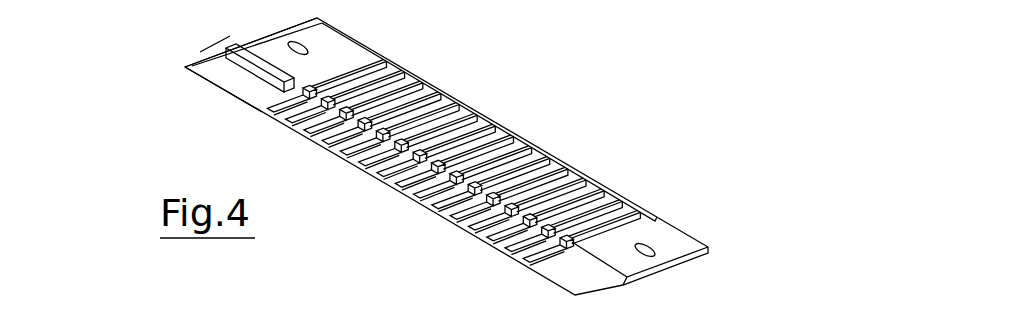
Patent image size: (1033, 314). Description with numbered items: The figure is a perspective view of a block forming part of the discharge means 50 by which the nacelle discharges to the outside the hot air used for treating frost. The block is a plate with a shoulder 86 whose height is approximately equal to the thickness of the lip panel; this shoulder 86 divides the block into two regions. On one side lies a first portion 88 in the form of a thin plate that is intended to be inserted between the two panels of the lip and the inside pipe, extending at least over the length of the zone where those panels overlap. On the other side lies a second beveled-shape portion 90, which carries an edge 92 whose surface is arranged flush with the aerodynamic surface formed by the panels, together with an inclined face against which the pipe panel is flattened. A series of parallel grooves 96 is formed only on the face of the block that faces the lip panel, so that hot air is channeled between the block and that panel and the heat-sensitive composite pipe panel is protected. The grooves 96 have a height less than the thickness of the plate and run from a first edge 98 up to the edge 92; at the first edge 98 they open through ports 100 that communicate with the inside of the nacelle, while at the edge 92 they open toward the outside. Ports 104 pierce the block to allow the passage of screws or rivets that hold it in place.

The discharge means 50 is at (204, 51).
The shoulder 86 is at (275, 69).
The first portion 88 is at (633, 203).
The second beveled-shape portion 90 is at (215, 53).
The edge 92 is at (236, 89).
The grooves 96 is at (489, 128).
The first edge 98 is at (688, 238).
The ports 100 is at (479, 118).
The ports 104 is at (287, 45).